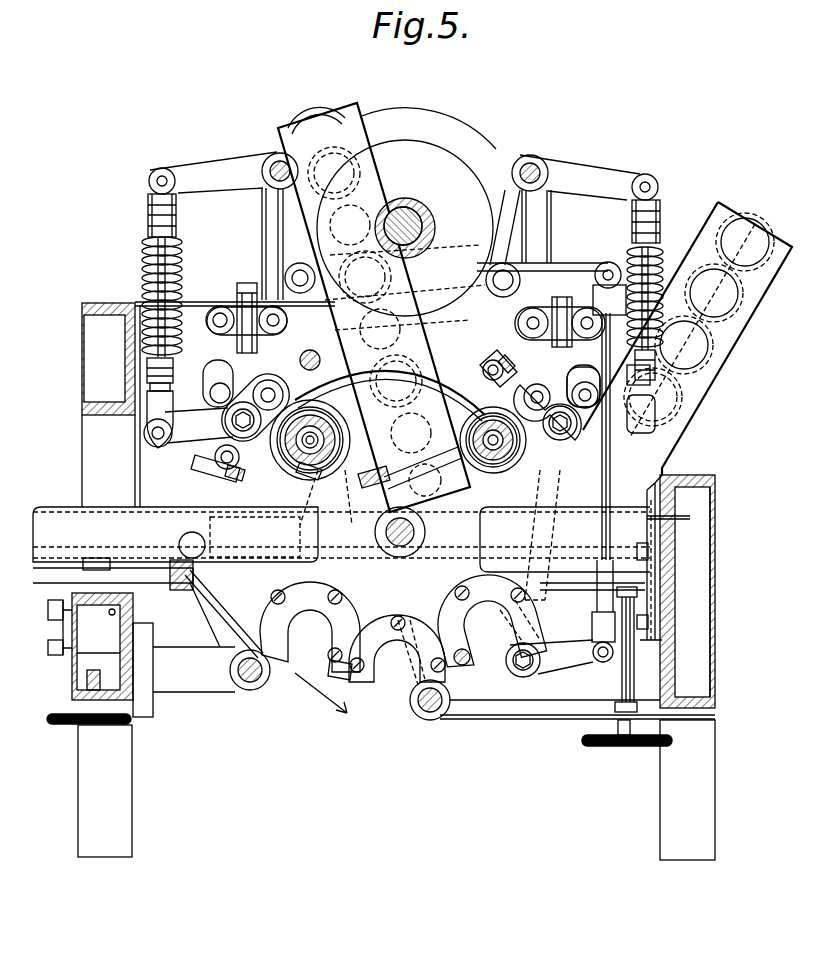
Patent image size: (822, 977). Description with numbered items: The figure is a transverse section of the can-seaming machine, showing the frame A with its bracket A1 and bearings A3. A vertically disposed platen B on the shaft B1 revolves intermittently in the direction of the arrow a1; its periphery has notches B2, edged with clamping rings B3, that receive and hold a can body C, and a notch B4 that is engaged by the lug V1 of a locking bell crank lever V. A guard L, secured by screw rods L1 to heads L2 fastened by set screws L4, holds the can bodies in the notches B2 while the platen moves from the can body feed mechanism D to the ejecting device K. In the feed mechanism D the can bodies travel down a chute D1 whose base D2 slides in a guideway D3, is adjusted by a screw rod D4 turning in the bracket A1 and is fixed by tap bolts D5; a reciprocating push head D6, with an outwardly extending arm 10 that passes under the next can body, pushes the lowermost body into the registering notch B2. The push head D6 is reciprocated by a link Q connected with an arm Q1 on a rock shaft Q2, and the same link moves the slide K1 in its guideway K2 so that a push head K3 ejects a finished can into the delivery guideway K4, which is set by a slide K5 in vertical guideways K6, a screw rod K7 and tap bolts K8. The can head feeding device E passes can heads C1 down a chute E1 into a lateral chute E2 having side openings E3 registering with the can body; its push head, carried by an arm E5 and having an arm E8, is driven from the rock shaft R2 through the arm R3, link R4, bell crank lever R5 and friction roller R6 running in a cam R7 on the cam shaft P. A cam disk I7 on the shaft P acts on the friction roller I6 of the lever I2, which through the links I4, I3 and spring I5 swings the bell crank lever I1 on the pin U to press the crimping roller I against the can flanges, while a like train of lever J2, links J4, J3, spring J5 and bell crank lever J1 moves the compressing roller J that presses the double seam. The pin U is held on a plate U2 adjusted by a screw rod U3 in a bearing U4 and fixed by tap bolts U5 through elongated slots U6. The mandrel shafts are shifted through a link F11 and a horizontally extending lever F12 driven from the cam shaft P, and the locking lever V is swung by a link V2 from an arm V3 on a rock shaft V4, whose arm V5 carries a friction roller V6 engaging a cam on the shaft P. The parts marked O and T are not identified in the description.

The main frame A is at (380, 581).
The bracket A1 is at (543, 718).
The bearings A3 is at (197, 695).
The platen B is at (365, 600).
The shaft B1 is at (415, 528).
The notches B2 is at (403, 623).
The clamping rings B3 is at (448, 615).
The notch B4 is at (267, 590).
The can body C is at (757, 224).
The can head C1 is at (310, 118).
The can body feed mechanism D is at (672, 522).
The chute D1 is at (730, 334).
The base D2 is at (592, 618).
The guideway D3 is at (667, 593).
The screw rod D4 is at (622, 676).
The tap bolts D5 is at (645, 549).
The push head D6 is at (640, 512).
The outwardly extending arm 10 is at (678, 512).
The can head feeding device E is at (362, 114).
The chute E1 is at (283, 162).
The lateral chute E2 is at (470, 506).
The side openings E3 is at (483, 375).
The arm E5 is at (367, 484).
The outwardly extending arm E8 is at (335, 472).
The link F11 is at (263, 280).
The horizontally extending lever F12 is at (273, 273).
The crimping roller I is at (537, 385).
The bell crank lever I1 is at (570, 390).
The lever I2 is at (588, 172).
The link I3 is at (665, 263).
The link I4 is at (658, 203).
The spring I5 is at (585, 260).
The friction roller I6 is at (412, 148).
The cam disk I7 is at (465, 190).
The compressing roller J is at (285, 339).
The bell crank lever J1 is at (210, 400).
The lever J2 is at (214, 166).
The link J3 is at (150, 280).
The link J4 is at (148, 208).
The spring J5 is at (173, 257).
The ejecting device K is at (269, 450).
The slide K1 is at (300, 527).
The guideway K2 is at (212, 522).
The push head K3 is at (322, 547).
The delivery guideway K4 is at (102, 517).
The slide K5 is at (63, 620).
The vertical guideways K6 is at (102, 646).
The adjusting screw rod K7 is at (87, 676).
The tap bolts K8 is at (66, 657).
The guard L is at (390, 384).
The screw rods L1 is at (195, 462).
The heads L2 is at (211, 451).
The set screws L4 is at (230, 442).
The stud O is at (310, 350).
The cam shaft P is at (417, 228).
The link Q is at (387, 616).
The arm Q1 is at (401, 672).
The rock shaft Q2 is at (431, 718).
The rock shaft R2 is at (248, 693).
The upwardly extending arm R3 is at (220, 627).
The link R4 is at (403, 592).
The bell crank lever R5 is at (491, 330).
The friction roller R6 is at (417, 260).
The cam R7 is at (420, 100).
The pinion T is at (485, 442).
The pivot pin U is at (590, 398).
The plate U2 is at (233, 360).
The screw rod U3 is at (280, 388).
The bearing U4 is at (240, 300).
The tap bolts U5 is at (223, 387).
The elongated slots U6 is at (238, 380).
The bell crank lever V is at (562, 666).
The lug V1 is at (537, 598).
The link V2 is at (570, 490).
The arm V3 is at (567, 270).
The rock shaft V4 is at (503, 277).
The arm V5 is at (447, 333).
The friction roller V6 is at (393, 291).
The arrow a1 is at (321, 693).